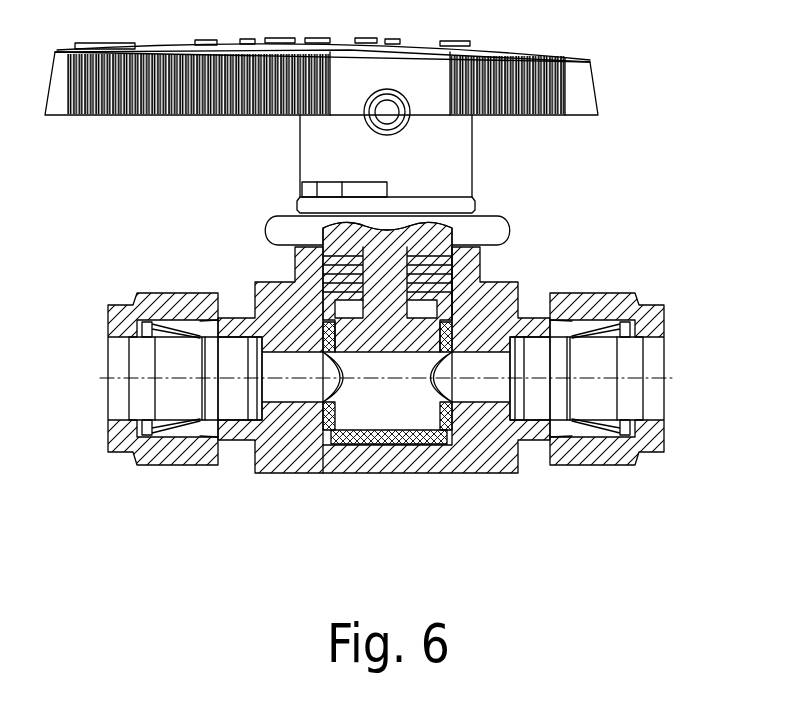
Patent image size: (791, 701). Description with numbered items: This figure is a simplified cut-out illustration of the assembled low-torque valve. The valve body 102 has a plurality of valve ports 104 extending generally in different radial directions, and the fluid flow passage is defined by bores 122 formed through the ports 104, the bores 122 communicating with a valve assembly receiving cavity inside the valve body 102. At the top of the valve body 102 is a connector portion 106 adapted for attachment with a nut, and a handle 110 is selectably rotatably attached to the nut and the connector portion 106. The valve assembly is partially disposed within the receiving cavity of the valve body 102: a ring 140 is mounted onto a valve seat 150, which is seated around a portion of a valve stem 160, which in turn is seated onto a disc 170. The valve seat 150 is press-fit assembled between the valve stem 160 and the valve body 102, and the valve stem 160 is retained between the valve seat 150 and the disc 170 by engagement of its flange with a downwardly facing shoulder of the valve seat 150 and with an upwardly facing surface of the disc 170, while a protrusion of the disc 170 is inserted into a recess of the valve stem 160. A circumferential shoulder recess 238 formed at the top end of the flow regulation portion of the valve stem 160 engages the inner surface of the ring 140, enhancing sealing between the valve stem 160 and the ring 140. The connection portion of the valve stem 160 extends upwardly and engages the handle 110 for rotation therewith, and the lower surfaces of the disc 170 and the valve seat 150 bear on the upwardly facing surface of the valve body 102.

The handle 110 is at (580, 106).
The connector portion 106 is at (500, 230).
The circumferential shoulder recess 238 is at (454, 312).
The valve stem 160 is at (430, 335).
The valve ports 104 is at (157, 300).
The bores 122 is at (120, 333).
The ring 140 is at (345, 305).
The valve seat 150 is at (323, 335).
The disc 170 is at (385, 440).
The valve body 102 is at (476, 463).